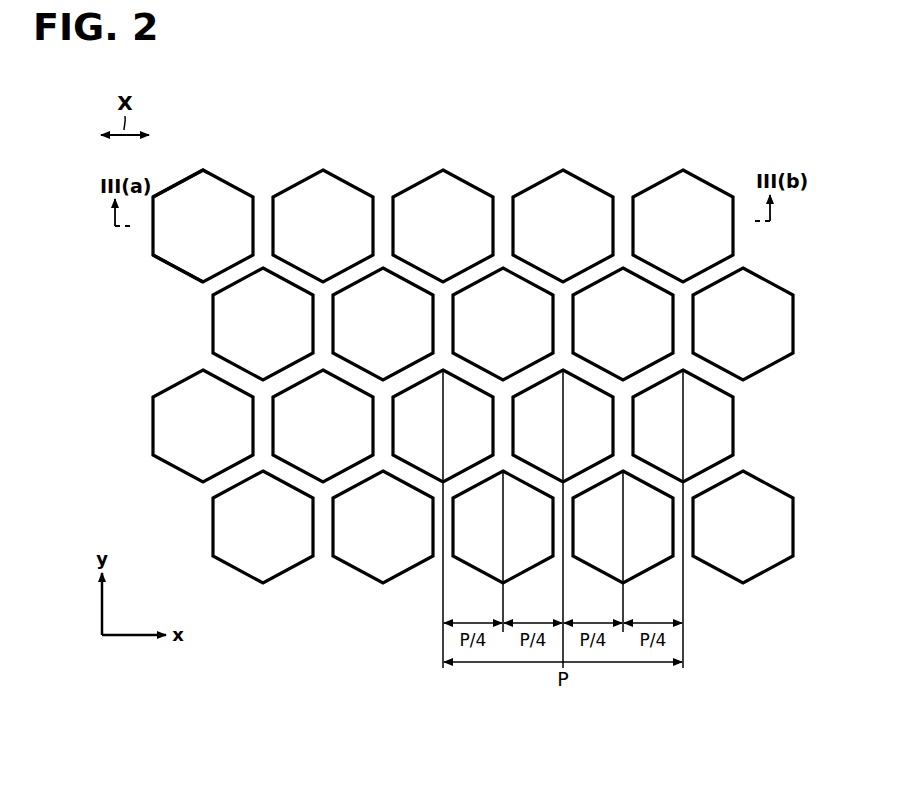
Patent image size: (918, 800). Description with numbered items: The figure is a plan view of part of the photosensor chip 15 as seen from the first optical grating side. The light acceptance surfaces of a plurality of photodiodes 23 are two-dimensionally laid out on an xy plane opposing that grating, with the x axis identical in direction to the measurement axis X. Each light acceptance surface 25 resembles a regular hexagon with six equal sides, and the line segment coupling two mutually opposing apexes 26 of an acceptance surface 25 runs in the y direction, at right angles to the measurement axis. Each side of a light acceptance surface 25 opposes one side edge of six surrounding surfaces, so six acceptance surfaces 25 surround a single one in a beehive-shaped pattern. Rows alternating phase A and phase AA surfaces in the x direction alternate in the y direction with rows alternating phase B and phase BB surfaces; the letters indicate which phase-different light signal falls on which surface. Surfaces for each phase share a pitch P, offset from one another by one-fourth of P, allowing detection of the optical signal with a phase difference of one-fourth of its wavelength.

The photosensor chip 15 is at (696, 149).
The photodiode 23 is at (204, 171).
The light acceptance surface 25 is at (228, 196).
The apex 26 is at (199, 172).